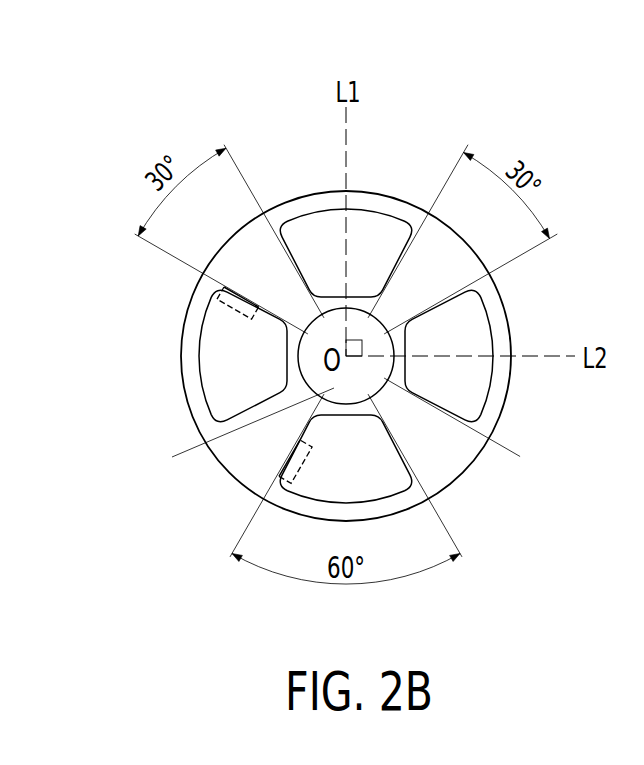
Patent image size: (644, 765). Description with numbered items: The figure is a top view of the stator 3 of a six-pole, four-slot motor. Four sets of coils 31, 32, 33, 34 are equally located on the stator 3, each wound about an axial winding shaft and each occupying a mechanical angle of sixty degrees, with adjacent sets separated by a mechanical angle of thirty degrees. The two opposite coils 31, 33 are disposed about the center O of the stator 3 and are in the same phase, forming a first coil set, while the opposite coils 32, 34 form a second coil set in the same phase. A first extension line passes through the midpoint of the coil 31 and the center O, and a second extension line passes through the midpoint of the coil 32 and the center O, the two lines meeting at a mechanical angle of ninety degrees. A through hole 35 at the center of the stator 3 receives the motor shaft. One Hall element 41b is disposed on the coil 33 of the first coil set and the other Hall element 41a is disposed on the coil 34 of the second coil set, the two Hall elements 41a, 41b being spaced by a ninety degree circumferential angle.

The stator 3 is at (478, 110).
The coil 31 is at (377, 232).
The coil 32 is at (475, 398).
The coil 33 is at (387, 473).
The coil 34 is at (227, 357).
The through hole 35 is at (334, 388).
The Hall element 41a is at (220, 288).
The Hall element 41b is at (282, 465).